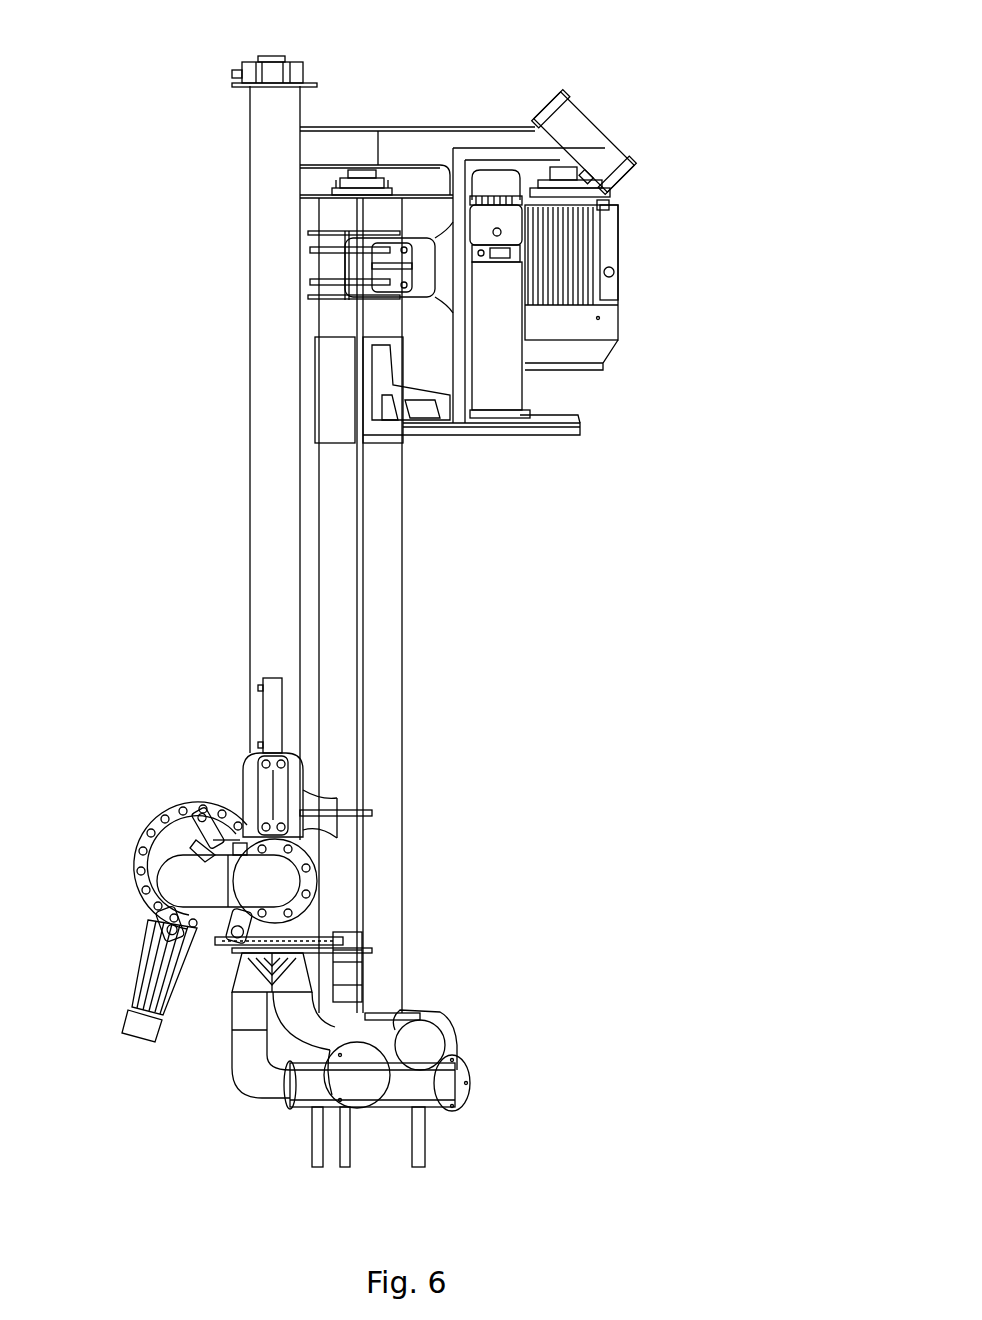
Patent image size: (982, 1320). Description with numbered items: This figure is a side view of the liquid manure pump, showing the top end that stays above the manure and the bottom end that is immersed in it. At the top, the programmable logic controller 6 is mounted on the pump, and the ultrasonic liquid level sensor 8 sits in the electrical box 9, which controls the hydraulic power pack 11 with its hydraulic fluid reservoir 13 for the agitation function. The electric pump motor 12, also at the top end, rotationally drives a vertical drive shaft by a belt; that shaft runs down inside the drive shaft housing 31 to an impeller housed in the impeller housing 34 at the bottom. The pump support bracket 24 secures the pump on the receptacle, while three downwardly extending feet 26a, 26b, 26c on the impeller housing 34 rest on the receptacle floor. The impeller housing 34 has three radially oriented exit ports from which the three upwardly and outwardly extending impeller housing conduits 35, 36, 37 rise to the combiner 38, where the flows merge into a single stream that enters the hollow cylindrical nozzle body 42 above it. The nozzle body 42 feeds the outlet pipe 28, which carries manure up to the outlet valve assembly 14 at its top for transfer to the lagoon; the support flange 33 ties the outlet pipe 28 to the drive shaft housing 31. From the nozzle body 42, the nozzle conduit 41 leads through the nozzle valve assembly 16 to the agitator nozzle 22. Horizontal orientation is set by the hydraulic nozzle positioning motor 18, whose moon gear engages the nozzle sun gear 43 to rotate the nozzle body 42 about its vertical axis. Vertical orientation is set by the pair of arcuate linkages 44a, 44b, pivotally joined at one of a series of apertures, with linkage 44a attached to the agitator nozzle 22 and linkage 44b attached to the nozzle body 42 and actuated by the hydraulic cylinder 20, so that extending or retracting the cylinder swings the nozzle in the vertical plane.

The programmable logic controller 6 is at (565, 120).
The ultrasonic liquid level sensor 8 is at (604, 207).
The electrical box 9 is at (487, 205).
The hydraulic power pack 11 is at (504, 185).
The electric pump motor 12 is at (580, 250).
The hydraulic fluid reservoir 13 is at (518, 384).
The outlet valve assembly 14 is at (262, 60).
The nozzle valve assembly 16 is at (265, 788).
The hydraulic nozzle positioning motor 18 is at (350, 970).
The hydraulic cylinder 20 is at (205, 850).
The agitator nozzle 22 is at (142, 1025).
The pump support bracket 24 is at (565, 426).
The foot 26a is at (318, 1160).
The foot 26b is at (343, 1160).
The foot 26c is at (420, 1155).
The outlet pipe 28 is at (265, 132).
The drive shaft housing 31 is at (390, 535).
The support flange 33 is at (340, 805).
The impeller housing 34 is at (430, 1085).
The impeller housing conduit 35 is at (420, 1048).
The impeller housing conduit 36 is at (360, 1075).
The impeller housing conduit 37 is at (245, 1058).
The combiner 38 is at (258, 960).
The nozzle conduit 41 is at (192, 887).
The nozzle body 42 is at (310, 848).
The nozzle sun gear 43 is at (325, 935).
The arcuate linkage 44a is at (150, 838).
The arcuate linkage 44b is at (215, 813).